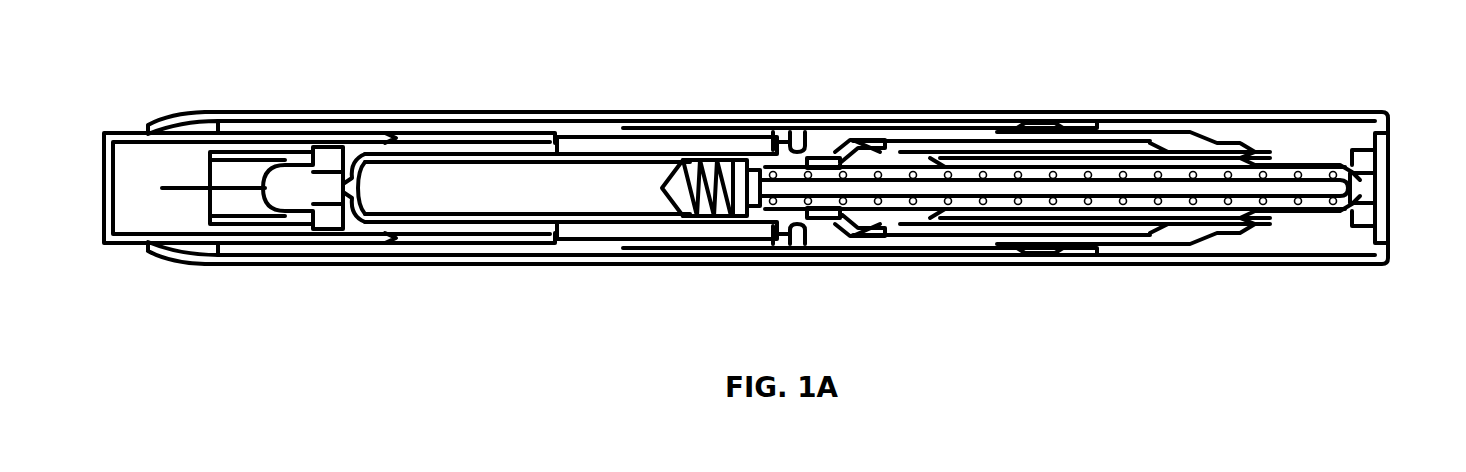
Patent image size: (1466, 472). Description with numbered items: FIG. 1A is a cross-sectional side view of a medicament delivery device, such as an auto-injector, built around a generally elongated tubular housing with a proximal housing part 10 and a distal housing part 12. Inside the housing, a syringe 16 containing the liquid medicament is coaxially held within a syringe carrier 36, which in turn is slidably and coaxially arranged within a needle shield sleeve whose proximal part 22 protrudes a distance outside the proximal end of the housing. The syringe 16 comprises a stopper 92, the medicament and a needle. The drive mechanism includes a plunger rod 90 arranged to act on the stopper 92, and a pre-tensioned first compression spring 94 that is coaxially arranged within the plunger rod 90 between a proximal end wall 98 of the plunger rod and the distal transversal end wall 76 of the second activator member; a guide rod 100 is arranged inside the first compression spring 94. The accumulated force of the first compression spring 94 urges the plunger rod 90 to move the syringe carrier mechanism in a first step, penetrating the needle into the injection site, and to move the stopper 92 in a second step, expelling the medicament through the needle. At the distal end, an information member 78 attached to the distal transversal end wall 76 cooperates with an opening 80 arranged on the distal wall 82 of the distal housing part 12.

The proximal housing part 10 is at (360, 121).
The distal housing part 12 is at (1118, 120).
The syringe 16 is at (468, 200).
The proximal part of needle shield 22 is at (249, 130).
The syringe carrier 36 is at (548, 239).
The distal transversal end wall 76 is at (1348, 190).
The information member 78 is at (1362, 200).
The opening 80 is at (1387, 186).
The distal wall 82 is at (1387, 156).
The plunger rod 90 is at (975, 207).
The stopper 92 is at (678, 176).
The first compression spring 94 is at (810, 168).
The proximal end wall of plunger rod 98 is at (758, 202).
The guide rod 100 is at (1036, 183).